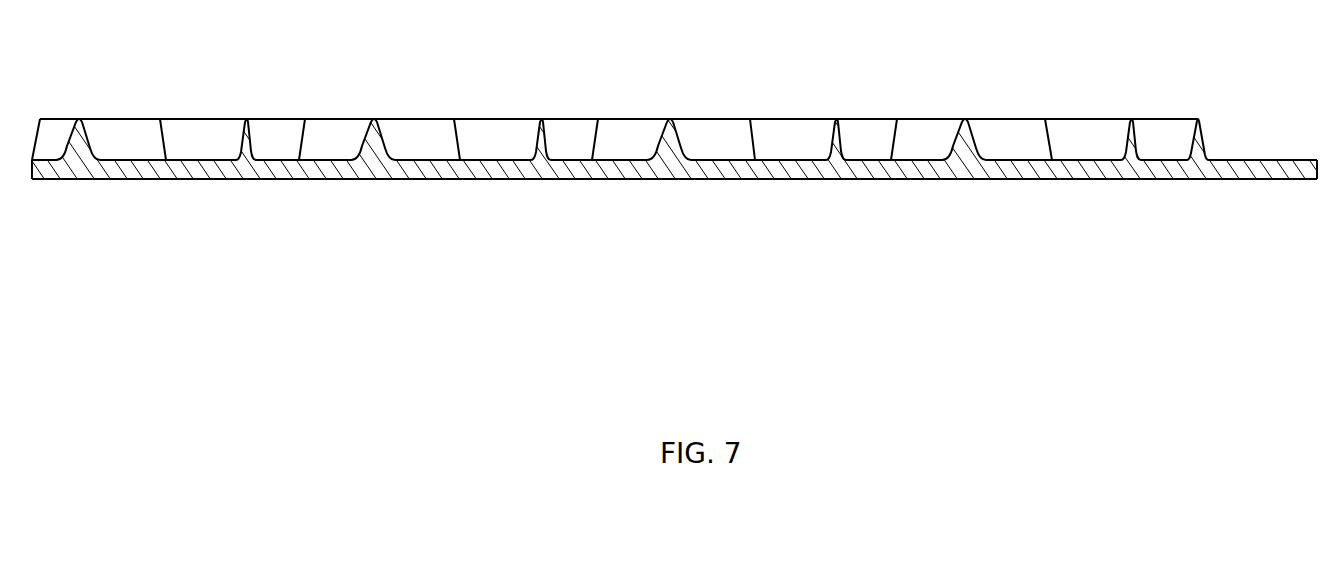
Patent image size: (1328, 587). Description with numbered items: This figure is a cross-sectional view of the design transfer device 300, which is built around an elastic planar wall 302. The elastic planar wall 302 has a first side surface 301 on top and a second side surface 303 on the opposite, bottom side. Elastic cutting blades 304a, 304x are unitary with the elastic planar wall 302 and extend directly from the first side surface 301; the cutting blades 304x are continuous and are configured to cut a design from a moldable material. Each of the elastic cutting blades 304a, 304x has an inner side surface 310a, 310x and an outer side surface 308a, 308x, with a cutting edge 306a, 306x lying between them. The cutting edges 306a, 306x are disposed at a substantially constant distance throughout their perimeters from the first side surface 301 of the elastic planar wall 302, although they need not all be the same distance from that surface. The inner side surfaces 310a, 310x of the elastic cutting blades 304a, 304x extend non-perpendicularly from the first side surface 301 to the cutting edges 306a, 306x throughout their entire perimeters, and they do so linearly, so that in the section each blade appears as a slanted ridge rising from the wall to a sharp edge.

The design transfer device 300 is at (1100, 95).
The first side surface 301 is at (491, 157).
The elastic planar wall 302 is at (929, 172).
The second side surface 303 is at (283, 180).
The elastic cutting blade 304x is at (795, 142).
The elastic cutting blade 304a is at (1158, 148).
The cutting edge 306x is at (671, 118).
The cutting edge 306a is at (1199, 120).
The outer side surface 308x is at (655, 124).
The outer side surface 308a is at (1206, 139).
The inner side surface 310x is at (681, 132).
The inner side surface 310a is at (1191, 128).